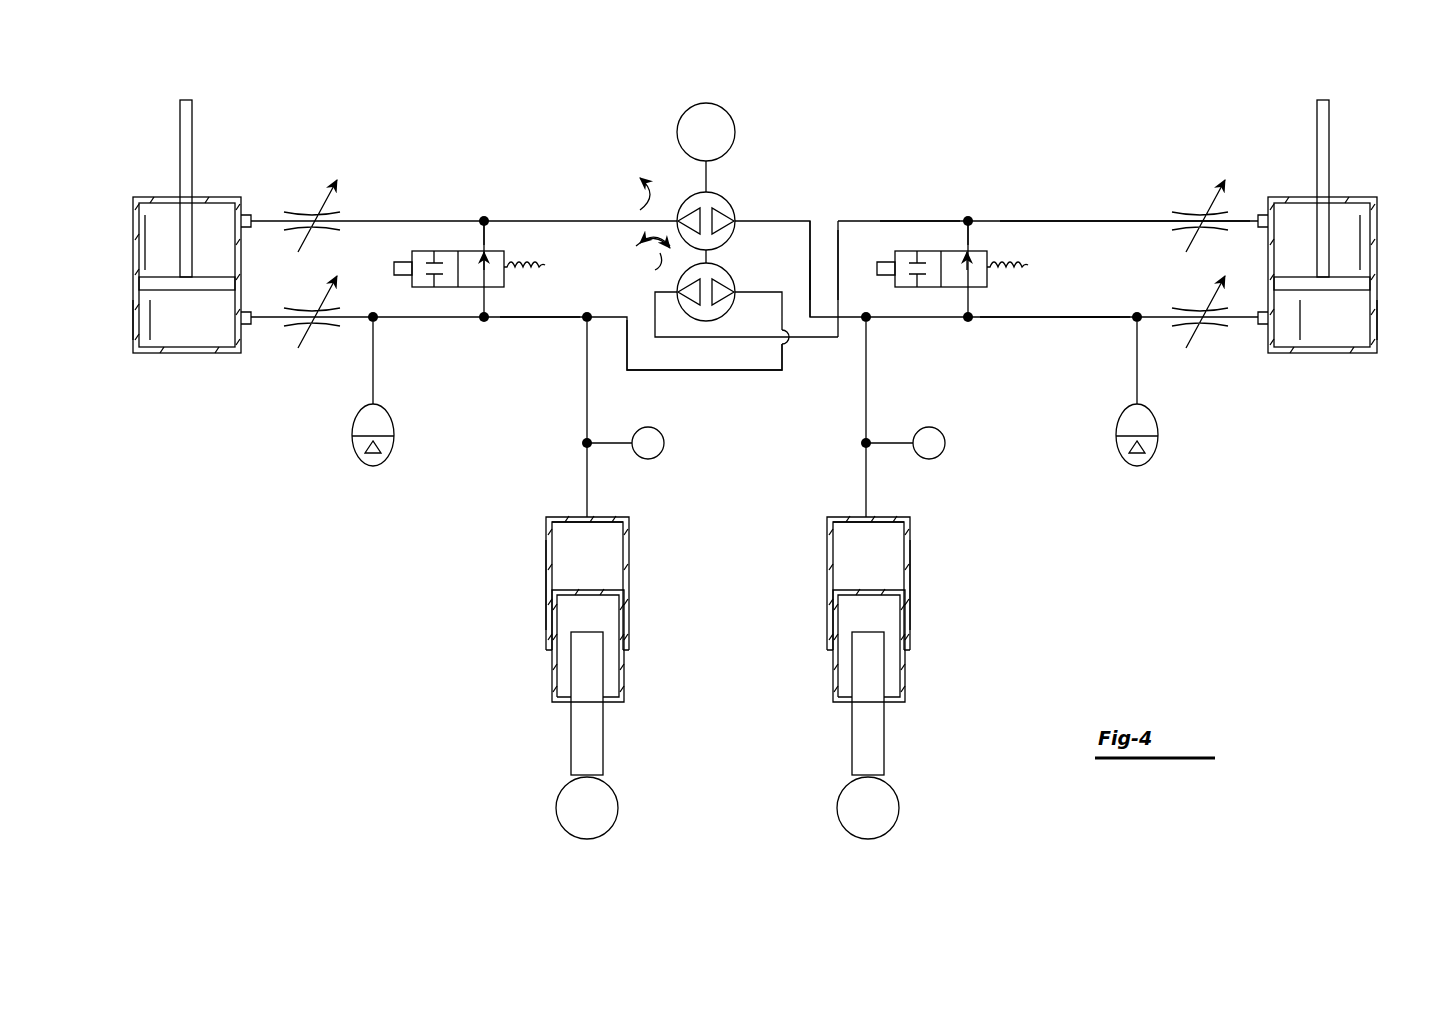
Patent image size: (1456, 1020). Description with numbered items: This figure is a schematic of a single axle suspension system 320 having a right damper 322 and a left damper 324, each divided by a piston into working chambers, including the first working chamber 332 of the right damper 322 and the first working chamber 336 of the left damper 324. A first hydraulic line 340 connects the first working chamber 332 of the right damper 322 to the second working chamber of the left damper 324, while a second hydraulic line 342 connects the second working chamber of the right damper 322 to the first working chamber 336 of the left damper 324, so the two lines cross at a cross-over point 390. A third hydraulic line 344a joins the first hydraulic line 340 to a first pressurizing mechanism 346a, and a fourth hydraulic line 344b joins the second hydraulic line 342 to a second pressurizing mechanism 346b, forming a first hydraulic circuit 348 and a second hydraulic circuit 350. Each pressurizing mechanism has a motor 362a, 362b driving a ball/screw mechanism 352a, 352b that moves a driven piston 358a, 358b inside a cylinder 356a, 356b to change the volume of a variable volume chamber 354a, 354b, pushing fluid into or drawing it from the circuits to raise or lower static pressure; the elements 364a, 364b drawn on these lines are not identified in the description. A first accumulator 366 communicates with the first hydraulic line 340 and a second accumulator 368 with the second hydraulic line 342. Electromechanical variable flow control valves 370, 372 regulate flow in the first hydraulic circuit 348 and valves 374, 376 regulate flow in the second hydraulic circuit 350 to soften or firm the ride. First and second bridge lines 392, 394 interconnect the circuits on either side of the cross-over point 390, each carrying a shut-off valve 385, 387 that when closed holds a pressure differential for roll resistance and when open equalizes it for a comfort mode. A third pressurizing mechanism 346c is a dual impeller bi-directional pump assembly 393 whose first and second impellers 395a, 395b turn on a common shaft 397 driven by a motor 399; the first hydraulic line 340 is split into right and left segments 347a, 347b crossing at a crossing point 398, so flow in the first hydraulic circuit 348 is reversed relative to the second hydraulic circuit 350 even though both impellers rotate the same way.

The single axle suspension system 320 is at (272, 562).
The right damper 322 is at (1365, 180).
The left damper 324 is at (143, 180).
The first working chamber 332 is at (1350, 243).
The first working chamber 336 is at (160, 243).
The first hydraulic line 340 is at (890, 221).
The second hydraulic line 342 is at (1095, 320).
The third hydraulic line 344a is at (584, 402).
The fourth hydraulic line 344b is at (866, 478).
The first pressurizing mechanism 346a is at (648, 575).
The second pressurizing mechanism 346b is at (803, 628).
The third pressurizing mechanism 346c is at (748, 180).
The right segment 347a is at (868, 221).
The left segment 347b is at (524, 318).
The first hydraulic circuit 348 is at (1073, 215).
The second hydraulic circuit 350 is at (992, 322).
The ball/screw mechanism 352a is at (580, 748).
The ball/screw mechanism 352b is at (875, 748).
The variable volume chamber 354a is at (570, 548).
The variable volume chamber 354b is at (888, 548).
The cylinder 356a is at (552, 573).
The cylinder 356b is at (907, 573).
The driven piston 358a is at (550, 660).
The driven piston 358b is at (907, 660).
The motor 362a is at (570, 808).
The motor 362b is at (885, 808).
The pressure sensor 364a is at (655, 430).
The pressure sensor 364b is at (935, 452).
The first accumulator 366 is at (352, 440).
The second accumulator 368 is at (1157, 445).
The first variable flow control valve 370 is at (1188, 210).
The second variable flow control valve 372 is at (300, 325).
The third variable flow control valve 374 is at (1205, 330).
The fourth variable flow control valve 376 is at (300, 210).
The first shut-off valve 385 is at (952, 251).
The second shut-off valve 387 is at (428, 251).
The cross-over point 390 is at (814, 225).
The first bridge line 392 is at (968, 225).
The dual impeller bi-directional pump assembly 393 is at (650, 243).
The second bridge line 394 is at (484, 225).
The first impeller 395a is at (733, 280).
The second impeller 395b is at (733, 205).
The common shaft 397 is at (706, 178).
The crossing point 398 is at (789, 344).
The motor 399 is at (716, 117).